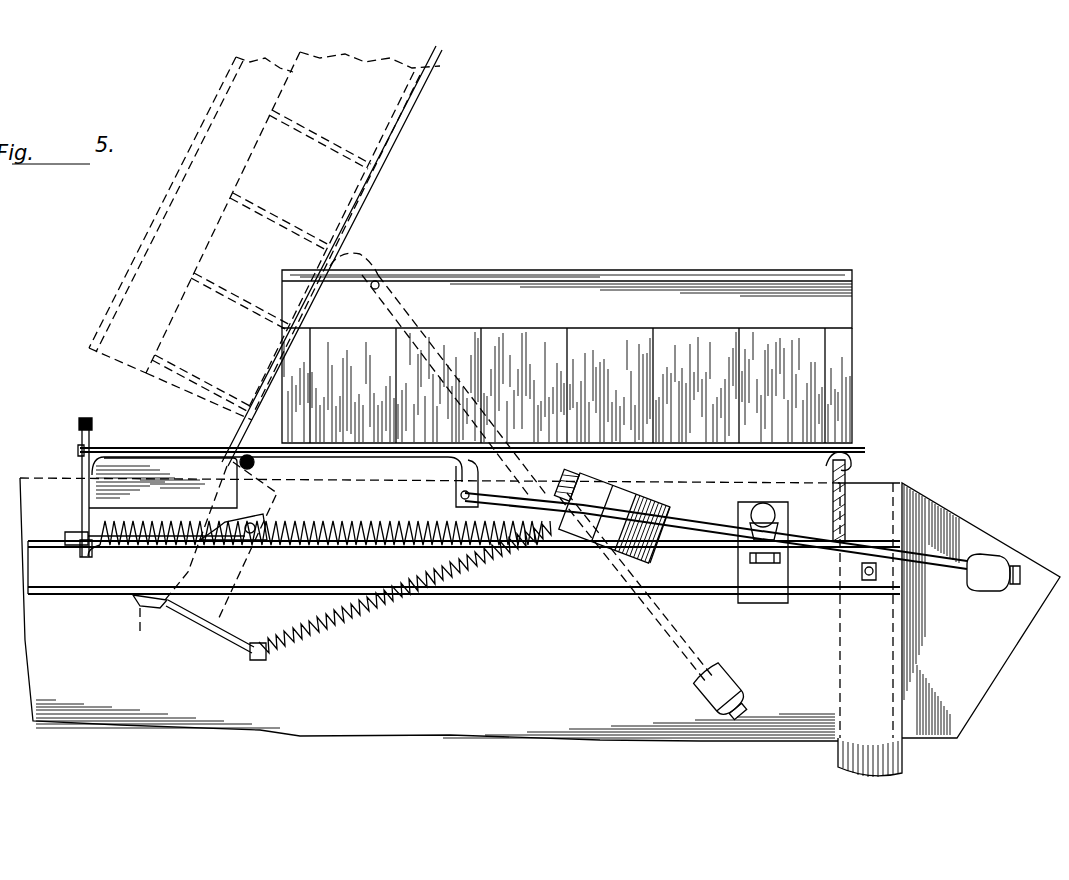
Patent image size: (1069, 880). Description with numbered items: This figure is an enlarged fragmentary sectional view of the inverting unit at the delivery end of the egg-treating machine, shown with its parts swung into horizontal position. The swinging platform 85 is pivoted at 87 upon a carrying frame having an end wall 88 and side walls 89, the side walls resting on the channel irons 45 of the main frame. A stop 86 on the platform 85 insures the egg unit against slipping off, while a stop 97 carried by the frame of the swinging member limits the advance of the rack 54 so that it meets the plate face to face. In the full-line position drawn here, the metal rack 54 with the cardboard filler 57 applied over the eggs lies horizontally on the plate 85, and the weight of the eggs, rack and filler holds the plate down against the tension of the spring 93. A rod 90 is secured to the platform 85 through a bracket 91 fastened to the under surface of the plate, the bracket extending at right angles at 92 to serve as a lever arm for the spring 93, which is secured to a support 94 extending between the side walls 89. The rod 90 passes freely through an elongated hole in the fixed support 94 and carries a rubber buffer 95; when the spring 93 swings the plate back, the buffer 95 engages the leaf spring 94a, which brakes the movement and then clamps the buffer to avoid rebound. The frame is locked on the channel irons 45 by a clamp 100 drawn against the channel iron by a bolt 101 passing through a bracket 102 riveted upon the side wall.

The channel irons 45 is at (537, 586).
The rack 54 is at (212, 118).
The filler 57 is at (377, 128).
The platform 85 is at (367, 200).
The stop 86 is at (95, 420).
The pivot 87 is at (254, 468).
The end wall 88 is at (848, 512).
The side walls 89 is at (796, 516).
The rod 90 is at (698, 523).
The bracket 91 is at (452, 500).
The lever arm 92 is at (80, 510).
The spring 93 is at (356, 518).
The support 94 is at (580, 478).
The leaf spring 94a is at (653, 560).
The buffer 95 is at (975, 591).
The stop 97 is at (128, 537).
The clamp 100 is at (798, 584).
The bolt 101 is at (760, 565).
The bracket 102 is at (752, 505).